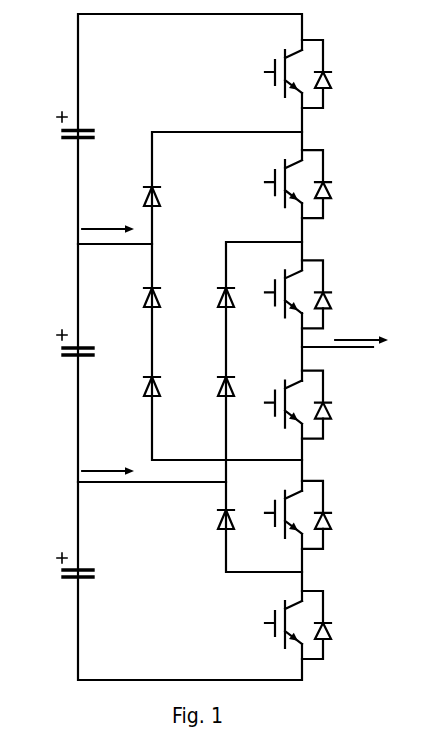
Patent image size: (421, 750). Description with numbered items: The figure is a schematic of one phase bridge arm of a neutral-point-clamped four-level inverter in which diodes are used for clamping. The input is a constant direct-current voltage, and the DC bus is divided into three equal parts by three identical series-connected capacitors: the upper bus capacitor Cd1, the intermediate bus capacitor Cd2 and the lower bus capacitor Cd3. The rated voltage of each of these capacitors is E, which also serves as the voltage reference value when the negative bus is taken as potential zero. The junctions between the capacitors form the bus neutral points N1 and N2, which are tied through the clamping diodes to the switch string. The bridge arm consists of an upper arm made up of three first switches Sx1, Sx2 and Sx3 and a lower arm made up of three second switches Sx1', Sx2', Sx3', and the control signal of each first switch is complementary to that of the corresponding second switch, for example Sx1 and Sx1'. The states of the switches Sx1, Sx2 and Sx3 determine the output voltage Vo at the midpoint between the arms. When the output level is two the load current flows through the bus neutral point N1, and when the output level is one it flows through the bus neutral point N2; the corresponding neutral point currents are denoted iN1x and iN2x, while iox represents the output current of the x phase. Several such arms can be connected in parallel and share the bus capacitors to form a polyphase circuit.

The first switch Sx1 is at (318, 74).
The first switch Sx2 is at (318, 184).
The first switch Sx3 is at (317, 294).
The second switch Sx1' is at (321, 405).
The second switch Sx2' is at (321, 515).
The second switch Sx3' is at (320, 625).
The upper bus capacitor Cd1 is at (57, 127).
The intermediate bus capacitor Cd2 is at (57, 347).
The lower bus capacitor Cd3 is at (57, 567).
The bus neutral point N1 is at (94, 244).
The bus neutral point N2 is at (131, 482).
The rated voltage of each capacitor E is at (110, 359).
The bus neutral point current for neutral point N1 iN1x is at (108, 215).
The bus neutral point current for neutral point N2 iN2x is at (108, 458).
The output current iox is at (361, 327).
The output voltage Vo is at (320, 346).